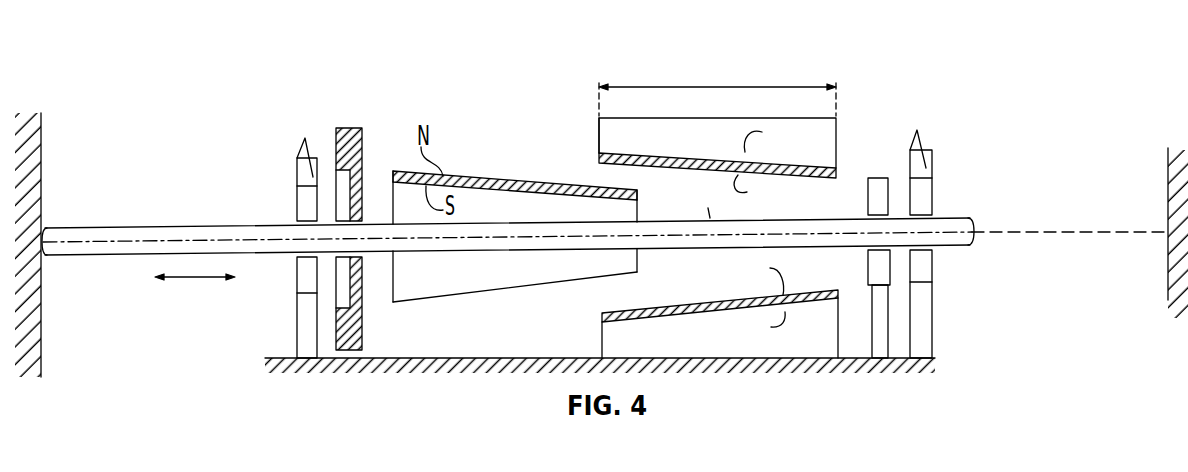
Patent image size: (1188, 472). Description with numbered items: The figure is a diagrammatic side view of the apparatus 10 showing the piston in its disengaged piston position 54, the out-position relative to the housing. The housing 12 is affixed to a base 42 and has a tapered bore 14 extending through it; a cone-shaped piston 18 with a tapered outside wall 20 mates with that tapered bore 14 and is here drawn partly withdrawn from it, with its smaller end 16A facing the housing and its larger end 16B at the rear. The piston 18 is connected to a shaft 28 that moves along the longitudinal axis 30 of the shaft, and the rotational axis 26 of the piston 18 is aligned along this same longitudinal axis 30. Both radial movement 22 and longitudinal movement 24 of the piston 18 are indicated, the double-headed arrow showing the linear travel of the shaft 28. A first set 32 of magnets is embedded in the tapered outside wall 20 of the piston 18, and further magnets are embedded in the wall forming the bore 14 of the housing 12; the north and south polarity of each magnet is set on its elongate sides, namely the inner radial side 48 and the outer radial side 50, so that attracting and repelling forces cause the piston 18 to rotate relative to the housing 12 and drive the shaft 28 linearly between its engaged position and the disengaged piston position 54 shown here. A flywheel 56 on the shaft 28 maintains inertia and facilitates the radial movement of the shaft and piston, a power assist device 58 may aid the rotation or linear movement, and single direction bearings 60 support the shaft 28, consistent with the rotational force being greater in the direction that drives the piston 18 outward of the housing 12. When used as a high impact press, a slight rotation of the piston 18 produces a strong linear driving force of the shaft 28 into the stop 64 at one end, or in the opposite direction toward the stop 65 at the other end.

The apparatus 10 is at (779, 202).
The housing 12 is at (826, 137).
The tapered bore 14 is at (630, 168).
The smaller end 16A is at (638, 215).
The second end of rotor 16B is at (393, 290).
The piston 18 is at (472, 282).
The tapered outside wall 20 is at (413, 302).
The radial movement 22 is at (676, 203).
The longitudinal movement 24 is at (193, 280).
The rotational axis 26 is at (528, 240).
The shaft 28 is at (133, 249).
The longitudinal axis 30 is at (190, 240).
The first set of magnets 32 is at (506, 172).
The base 42 is at (936, 357).
The inner radial side 48 is at (722, 170).
The outer radial side 50 is at (716, 172).
The disengaged piston position 54 is at (561, 118).
The flywheel 56 is at (366, 143).
The power assist device 58 is at (880, 193).
The single direction bearing 60 is at (296, 200).
The stop 64 is at (42, 182).
The stop 65 is at (1168, 180).